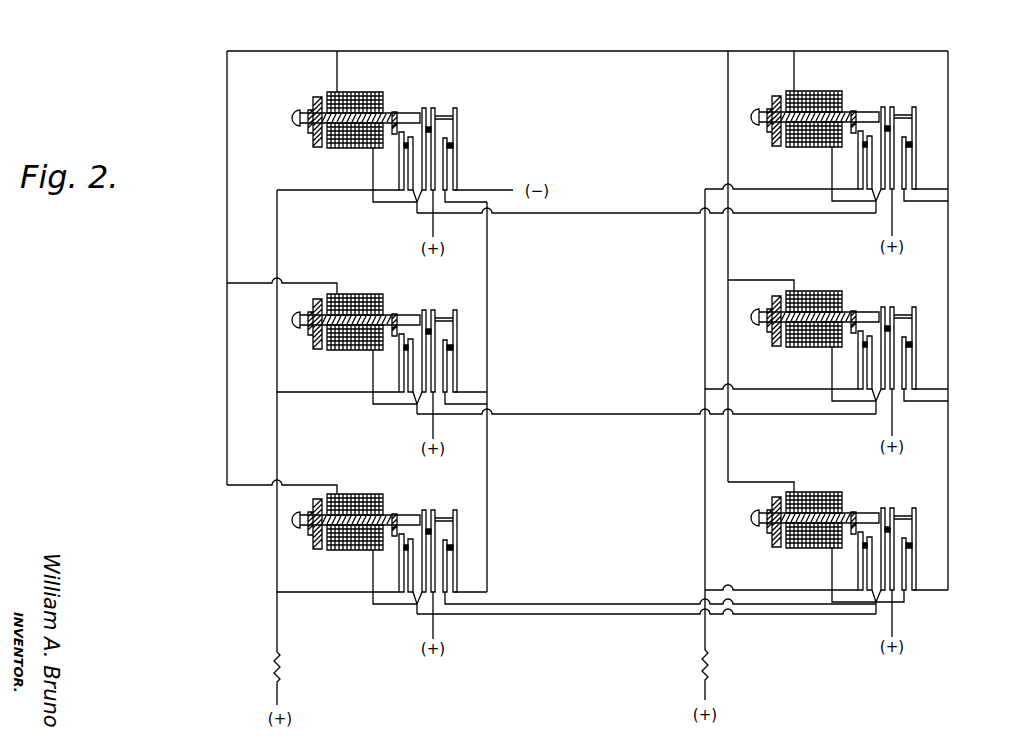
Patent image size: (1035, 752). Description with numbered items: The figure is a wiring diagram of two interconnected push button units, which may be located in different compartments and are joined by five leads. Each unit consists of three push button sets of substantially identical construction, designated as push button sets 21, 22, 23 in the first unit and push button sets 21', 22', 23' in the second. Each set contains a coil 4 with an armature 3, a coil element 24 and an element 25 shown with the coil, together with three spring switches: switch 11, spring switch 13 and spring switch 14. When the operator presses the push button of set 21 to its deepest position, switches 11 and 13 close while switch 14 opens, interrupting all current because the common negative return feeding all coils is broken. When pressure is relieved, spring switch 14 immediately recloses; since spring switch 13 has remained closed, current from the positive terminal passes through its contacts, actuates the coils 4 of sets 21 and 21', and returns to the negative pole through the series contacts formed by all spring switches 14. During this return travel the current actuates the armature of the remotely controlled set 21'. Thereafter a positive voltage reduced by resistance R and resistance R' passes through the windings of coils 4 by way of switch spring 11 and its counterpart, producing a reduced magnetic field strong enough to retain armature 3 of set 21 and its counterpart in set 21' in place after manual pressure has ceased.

The armature 3 is at (313, 101).
The coil 4 is at (331, 93).
The plunger shaft 24 is at (361, 100).
The armature stop 25 is at (394, 110).
The switch 11 is at (406, 147).
The spring switch 13 is at (430, 136).
The spring switch 14 is at (451, 151).
The push button set 21 is at (430, 155).
The push button set 22 is at (389, 358).
The push button set 23 is at (584, 558).
The push button set 21' is at (890, 154).
The push button set 22' is at (849, 357).
The push button set 23' is at (833, 557).
The resistance R is at (291, 678).
The resistance R' is at (722, 675).